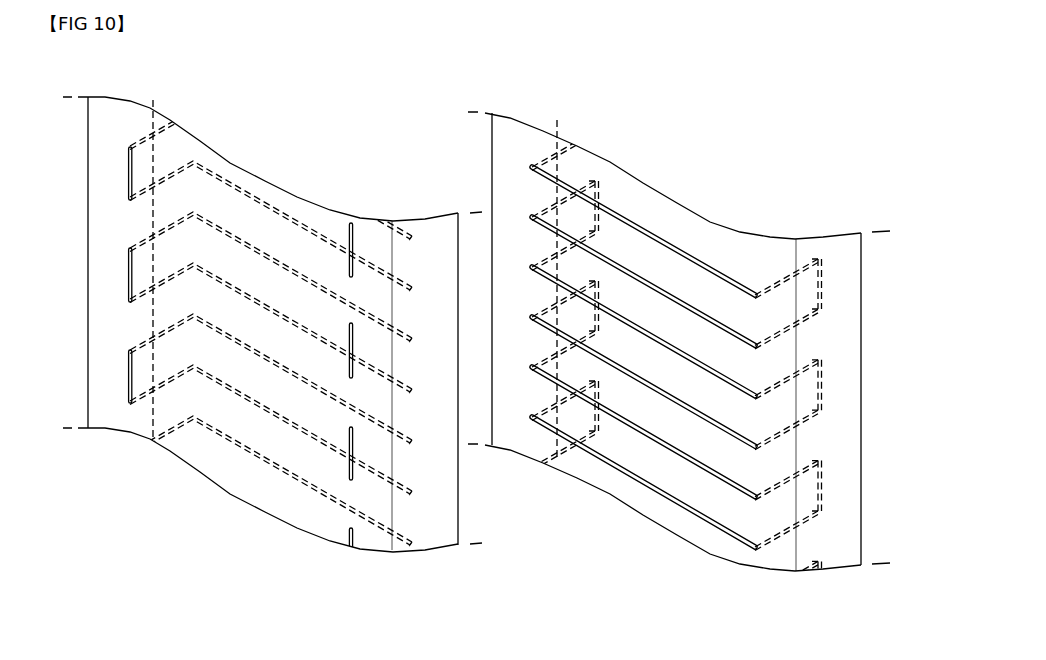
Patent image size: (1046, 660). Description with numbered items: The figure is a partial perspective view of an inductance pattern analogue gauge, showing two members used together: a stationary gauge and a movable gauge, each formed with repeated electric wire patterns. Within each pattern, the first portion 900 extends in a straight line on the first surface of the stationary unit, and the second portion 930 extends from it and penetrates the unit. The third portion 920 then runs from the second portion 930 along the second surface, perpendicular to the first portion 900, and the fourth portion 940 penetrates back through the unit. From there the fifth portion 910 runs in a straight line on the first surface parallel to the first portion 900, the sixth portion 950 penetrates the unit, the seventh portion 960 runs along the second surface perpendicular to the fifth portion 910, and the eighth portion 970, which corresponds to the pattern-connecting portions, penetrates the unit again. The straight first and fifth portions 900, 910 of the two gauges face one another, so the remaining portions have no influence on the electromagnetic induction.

The first portion 900 is at (227, 180).
The fifth portion 910 is at (249, 243).
The third portion 920 is at (351, 340).
The second portion 930 is at (397, 298).
The fourth portion 940 is at (378, 358).
The sixth portion 950 is at (157, 230).
The seventh portion 960 is at (130, 275).
The eighth portion 970 is at (168, 283).